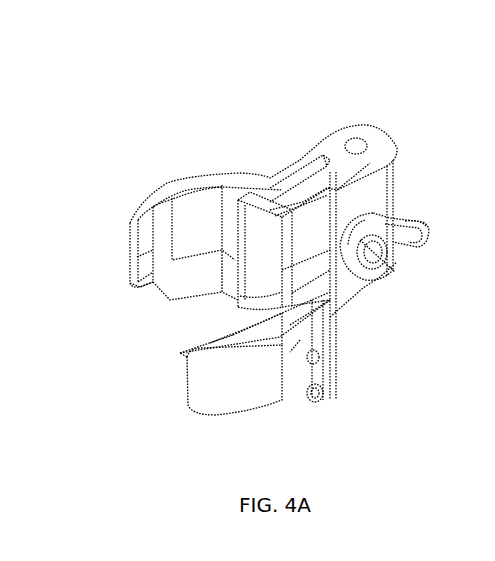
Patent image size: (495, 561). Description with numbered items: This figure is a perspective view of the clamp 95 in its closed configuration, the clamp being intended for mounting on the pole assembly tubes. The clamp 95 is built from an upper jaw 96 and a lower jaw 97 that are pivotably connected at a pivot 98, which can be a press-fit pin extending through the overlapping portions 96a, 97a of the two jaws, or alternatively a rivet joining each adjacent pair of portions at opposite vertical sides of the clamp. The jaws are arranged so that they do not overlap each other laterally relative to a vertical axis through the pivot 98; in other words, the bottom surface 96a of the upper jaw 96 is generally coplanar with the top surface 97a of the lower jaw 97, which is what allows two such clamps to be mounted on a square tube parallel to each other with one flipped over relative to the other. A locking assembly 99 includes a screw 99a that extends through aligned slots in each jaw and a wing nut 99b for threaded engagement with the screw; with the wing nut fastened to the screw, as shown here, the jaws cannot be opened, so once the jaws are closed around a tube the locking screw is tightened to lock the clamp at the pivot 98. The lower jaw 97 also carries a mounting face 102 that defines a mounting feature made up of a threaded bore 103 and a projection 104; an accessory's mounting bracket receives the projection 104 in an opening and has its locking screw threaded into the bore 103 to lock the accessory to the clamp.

The clamp 95 is at (272, 148).
The upper jaw 96 is at (165, 184).
The overlapping portion of upper jaw 96a is at (152, 283).
The lower jaw 97 is at (205, 388).
The overlapping portion of lower jaw 97a is at (268, 337).
The pivot 98 is at (356, 141).
The locking assembly 99 is at (429, 232).
The screw 99a is at (405, 256).
The wing nut 99b is at (420, 216).
The mounting face 102 is at (300, 340).
The threaded bore 103 is at (297, 358).
The projection 104 is at (322, 392).